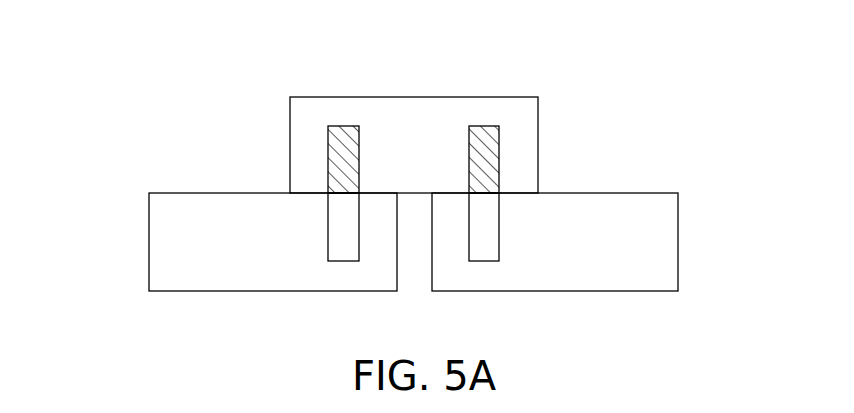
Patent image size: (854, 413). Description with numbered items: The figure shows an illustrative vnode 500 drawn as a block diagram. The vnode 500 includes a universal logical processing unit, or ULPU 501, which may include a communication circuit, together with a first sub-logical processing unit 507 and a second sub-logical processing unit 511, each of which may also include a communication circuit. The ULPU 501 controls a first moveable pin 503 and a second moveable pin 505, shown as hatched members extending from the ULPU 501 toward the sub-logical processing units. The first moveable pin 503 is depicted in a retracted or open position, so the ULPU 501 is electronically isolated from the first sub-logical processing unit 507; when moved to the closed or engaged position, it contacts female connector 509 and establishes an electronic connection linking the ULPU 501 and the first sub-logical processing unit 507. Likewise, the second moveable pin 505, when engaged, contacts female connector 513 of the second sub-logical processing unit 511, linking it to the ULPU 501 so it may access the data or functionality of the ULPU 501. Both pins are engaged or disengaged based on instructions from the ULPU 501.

The vnode 500 is at (144, 34).
The universal logical processing unit 501 is at (538, 139).
The first moveable pin 503 is at (328, 180).
The second moveable pin 505 is at (499, 183).
The first sub-logical processing unit 507 is at (149, 247).
The female connector 509 is at (327, 247).
The second sub-logical processing unit 511 is at (678, 243).
The female connector 513 is at (499, 247).